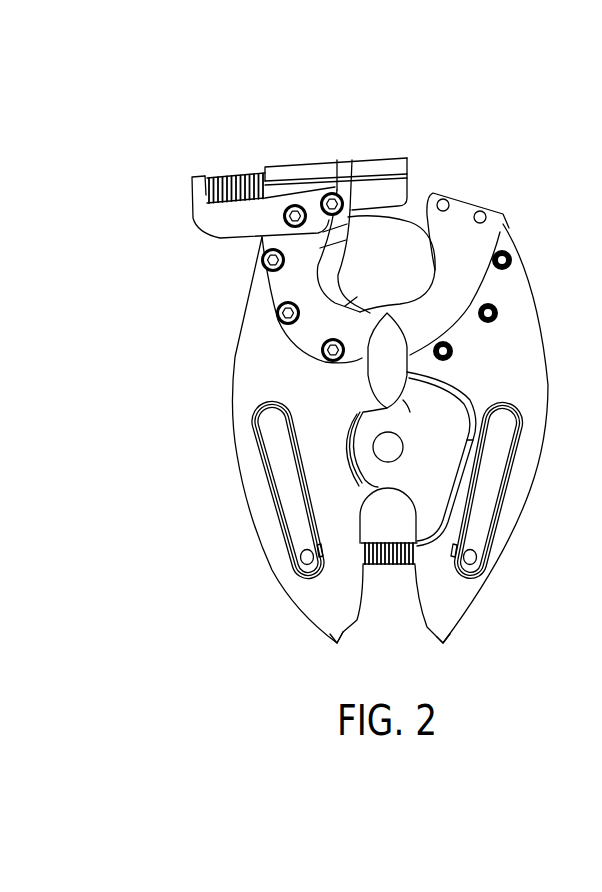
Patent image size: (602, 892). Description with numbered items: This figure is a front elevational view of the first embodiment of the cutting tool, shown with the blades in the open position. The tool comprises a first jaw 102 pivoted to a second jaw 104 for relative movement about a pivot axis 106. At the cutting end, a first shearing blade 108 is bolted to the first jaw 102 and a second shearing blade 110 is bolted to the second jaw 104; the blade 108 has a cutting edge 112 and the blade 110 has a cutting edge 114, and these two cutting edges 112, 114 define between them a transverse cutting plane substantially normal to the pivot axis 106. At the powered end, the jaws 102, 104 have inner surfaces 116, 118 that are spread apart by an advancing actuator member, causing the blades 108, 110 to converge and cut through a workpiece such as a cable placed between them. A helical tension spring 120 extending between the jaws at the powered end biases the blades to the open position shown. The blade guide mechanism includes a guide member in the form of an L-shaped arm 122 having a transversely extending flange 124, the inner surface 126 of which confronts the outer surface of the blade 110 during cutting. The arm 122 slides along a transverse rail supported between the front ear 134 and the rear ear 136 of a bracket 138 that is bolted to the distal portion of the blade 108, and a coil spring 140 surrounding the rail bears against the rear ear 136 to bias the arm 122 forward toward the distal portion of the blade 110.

The first jaw 102 is at (250, 375).
The second jaw 104 is at (530, 383).
The pivot axis 106 is at (390, 447).
The first shearing blade 108 is at (265, 275).
The second shearing blade 110 is at (493, 225).
The cutting edge 112 is at (340, 255).
The cutting edge 114 is at (427, 257).
The inner surface 116 is at (342, 643).
The inner surface 118 is at (437, 643).
The helical tension spring 120 is at (388, 565).
The L-shaped arm 122 is at (400, 159).
The flange 124 is at (397, 190).
The inner surface 126 is at (365, 203).
The front ear 134 is at (345, 172).
The rear ear 136 is at (192, 185).
The bracket 138 is at (215, 226).
The coil spring 140 is at (240, 178).